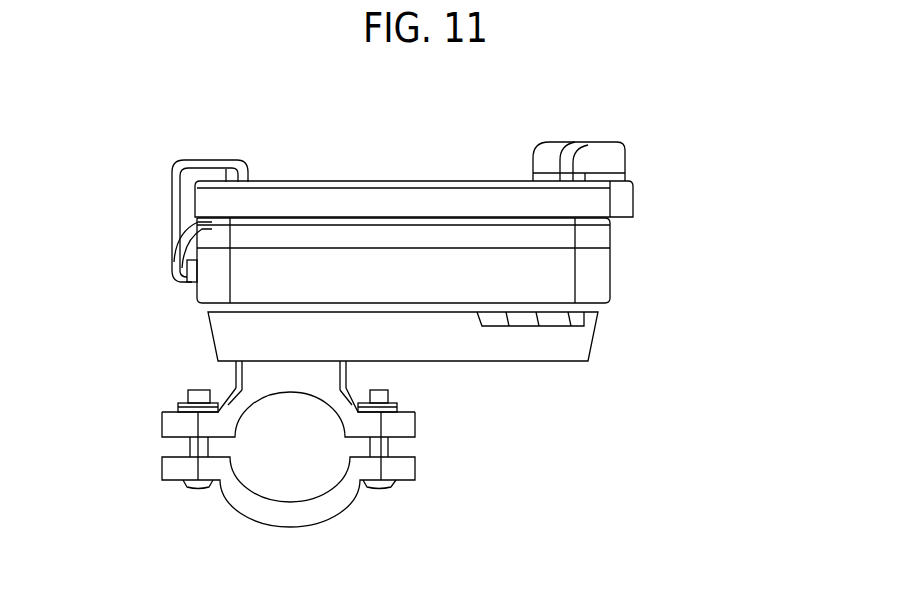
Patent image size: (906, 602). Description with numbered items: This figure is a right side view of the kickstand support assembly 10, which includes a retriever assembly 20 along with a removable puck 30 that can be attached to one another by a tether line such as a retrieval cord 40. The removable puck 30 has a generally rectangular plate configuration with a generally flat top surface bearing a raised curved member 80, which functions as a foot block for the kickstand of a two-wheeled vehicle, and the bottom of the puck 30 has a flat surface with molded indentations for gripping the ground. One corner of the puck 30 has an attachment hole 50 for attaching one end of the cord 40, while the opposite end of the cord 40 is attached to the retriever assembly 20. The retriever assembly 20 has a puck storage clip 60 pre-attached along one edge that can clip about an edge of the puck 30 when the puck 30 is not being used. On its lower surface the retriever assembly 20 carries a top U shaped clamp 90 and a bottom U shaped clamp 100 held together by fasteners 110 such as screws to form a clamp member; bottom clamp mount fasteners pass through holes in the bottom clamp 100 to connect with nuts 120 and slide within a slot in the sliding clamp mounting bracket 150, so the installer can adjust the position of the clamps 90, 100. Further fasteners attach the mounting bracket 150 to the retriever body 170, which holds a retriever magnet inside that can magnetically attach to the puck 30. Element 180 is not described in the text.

The kickstand support assembly 10 is at (714, 147).
The retriever assembly 20 is at (113, 316).
The removable puck 30 is at (458, 215).
The retrieval cord 40 is at (141, 269).
The attachment hole 50 is at (203, 177).
The puck storage clip 60 is at (249, 187).
The raised curved member 80 is at (605, 144).
The top U shaped clamp 90 is at (288, 512).
The bottom U shaped clamp 100 is at (345, 409).
The fasteners 110 is at (291, 477).
The nuts 120 is at (272, 413).
The sliding clamp mounting bracket 150 is at (451, 351).
The retriever body 170 is at (452, 271).
The housing band 180 is at (454, 249).